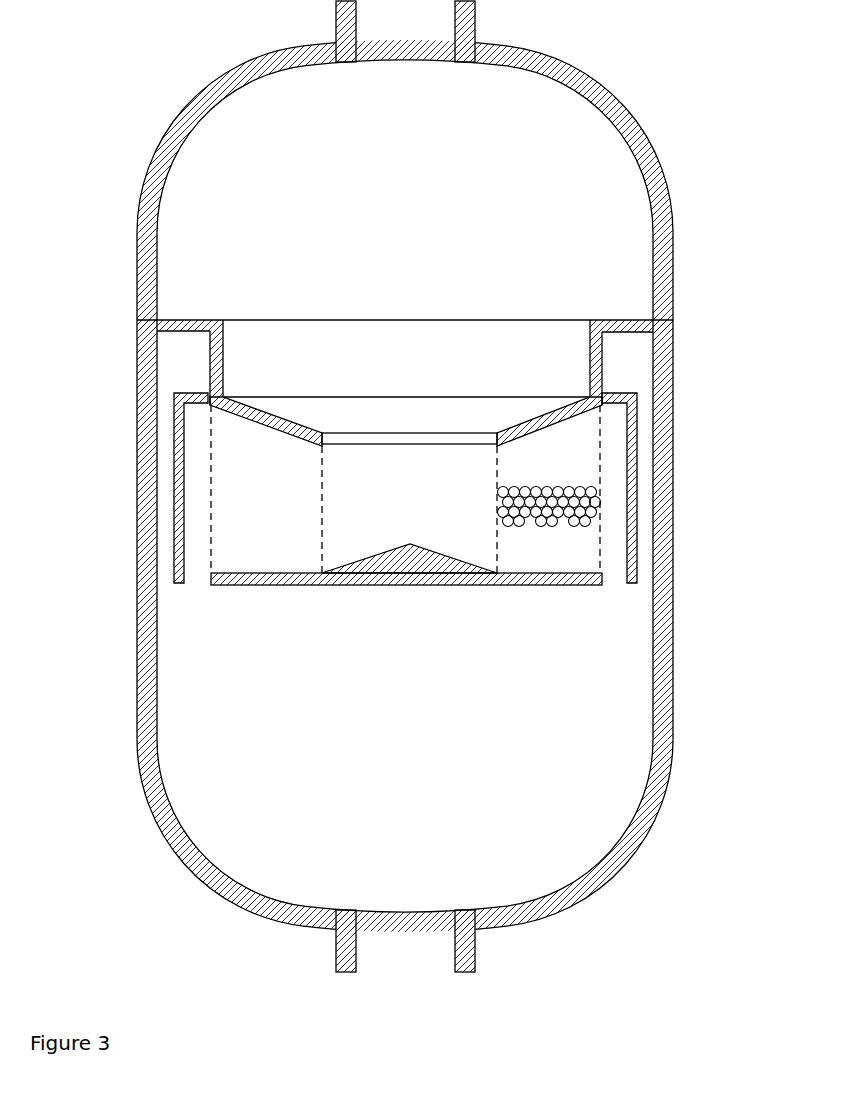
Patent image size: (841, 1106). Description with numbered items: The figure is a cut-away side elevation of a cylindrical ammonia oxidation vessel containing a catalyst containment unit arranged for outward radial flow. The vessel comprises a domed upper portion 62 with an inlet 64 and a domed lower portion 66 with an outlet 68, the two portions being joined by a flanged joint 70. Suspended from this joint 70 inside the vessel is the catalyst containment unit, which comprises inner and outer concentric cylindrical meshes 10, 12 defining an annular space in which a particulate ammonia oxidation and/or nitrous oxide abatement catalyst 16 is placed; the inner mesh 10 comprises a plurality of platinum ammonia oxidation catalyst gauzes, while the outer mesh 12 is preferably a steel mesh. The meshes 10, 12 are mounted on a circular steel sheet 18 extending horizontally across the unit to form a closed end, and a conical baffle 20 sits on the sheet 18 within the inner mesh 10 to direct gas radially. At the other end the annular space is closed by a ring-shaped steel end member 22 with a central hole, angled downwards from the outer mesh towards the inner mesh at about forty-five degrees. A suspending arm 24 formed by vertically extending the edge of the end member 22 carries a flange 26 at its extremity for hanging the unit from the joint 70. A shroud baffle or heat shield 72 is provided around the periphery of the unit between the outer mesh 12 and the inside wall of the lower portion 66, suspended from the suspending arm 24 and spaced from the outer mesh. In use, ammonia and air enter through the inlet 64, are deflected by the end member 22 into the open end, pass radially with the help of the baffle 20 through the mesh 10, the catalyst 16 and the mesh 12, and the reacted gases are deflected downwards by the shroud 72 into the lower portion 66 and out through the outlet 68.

The inner cylindrical mesh 10 is at (322, 523).
The outer cylindrical mesh 12 is at (211, 518).
The particulate catalyst 16 is at (497, 497).
The circular steel sheet 18 is at (302, 585).
The conical baffle 20 is at (422, 573).
The ring-shaped end member 22 is at (323, 408).
The suspending arm 24 is at (222, 352).
The flange 26 is at (178, 320).
The domed upper portion 62 is at (630, 118).
The inlet 64 is at (462, 24).
The domed lower portion 66 is at (672, 733).
The outlet 68 is at (475, 963).
The flanged joint 70 is at (664, 325).
The shroud baffle 72 is at (174, 545).